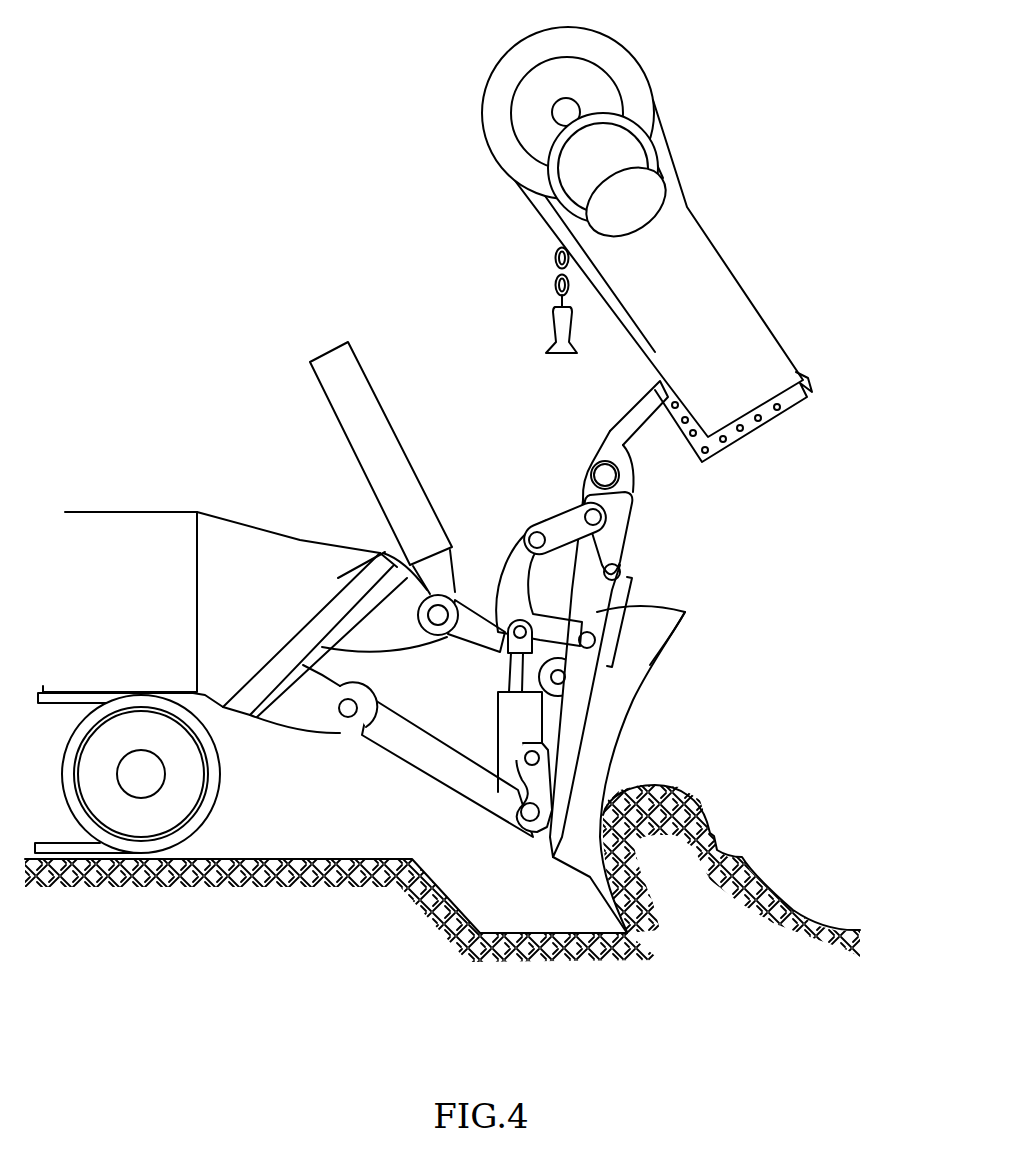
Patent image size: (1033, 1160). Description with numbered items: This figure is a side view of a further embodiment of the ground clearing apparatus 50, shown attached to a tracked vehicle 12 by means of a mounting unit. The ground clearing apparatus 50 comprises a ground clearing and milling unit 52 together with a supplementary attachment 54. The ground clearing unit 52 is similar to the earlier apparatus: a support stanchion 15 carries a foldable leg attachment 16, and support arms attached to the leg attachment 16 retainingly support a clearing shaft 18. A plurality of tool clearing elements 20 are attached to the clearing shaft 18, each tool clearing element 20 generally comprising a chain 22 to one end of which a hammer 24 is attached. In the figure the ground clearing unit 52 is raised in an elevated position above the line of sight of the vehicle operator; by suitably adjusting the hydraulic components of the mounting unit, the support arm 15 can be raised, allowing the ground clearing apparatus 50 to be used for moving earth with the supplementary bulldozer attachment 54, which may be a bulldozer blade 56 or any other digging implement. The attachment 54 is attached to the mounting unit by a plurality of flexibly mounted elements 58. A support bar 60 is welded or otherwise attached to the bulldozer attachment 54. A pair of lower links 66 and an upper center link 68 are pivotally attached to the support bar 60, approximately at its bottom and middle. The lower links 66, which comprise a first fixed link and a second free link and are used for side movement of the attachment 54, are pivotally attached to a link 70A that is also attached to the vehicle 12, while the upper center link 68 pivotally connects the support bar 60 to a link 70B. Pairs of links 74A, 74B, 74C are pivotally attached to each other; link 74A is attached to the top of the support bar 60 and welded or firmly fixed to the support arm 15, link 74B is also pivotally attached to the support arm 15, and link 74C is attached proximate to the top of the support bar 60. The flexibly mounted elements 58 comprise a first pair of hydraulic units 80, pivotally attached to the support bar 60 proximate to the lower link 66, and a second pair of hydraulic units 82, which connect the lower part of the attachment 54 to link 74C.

The tracked vehicle 12 is at (120, 512).
The support stanchion 15 is at (652, 470).
The foldable leg attachment 16 is at (716, 273).
The clearing shaft 18 is at (625, 48).
The tool clearing element 20 is at (513, 300).
The chain 22 is at (555, 281).
The hammer 24 is at (553, 330).
The ground clearing apparatus 50 is at (221, 446).
The ground clearing and milling unit 52 is at (790, 345).
The supplementary attachment 54 is at (605, 733).
The bulldozer blade 56 is at (650, 641).
The flexibly mounted elements 58 is at (471, 695).
The support bar 60 is at (612, 603).
The lower links 66 is at (425, 778).
The upper center link 68 is at (493, 633).
The link 70A is at (350, 728).
The link 70B is at (387, 623).
The link 74A is at (637, 546).
The link 74B is at (572, 527).
The link 74C is at (578, 617).
The first pair of hydraulic units 80 is at (352, 445).
The second pair of hydraulic units 82 is at (490, 757).